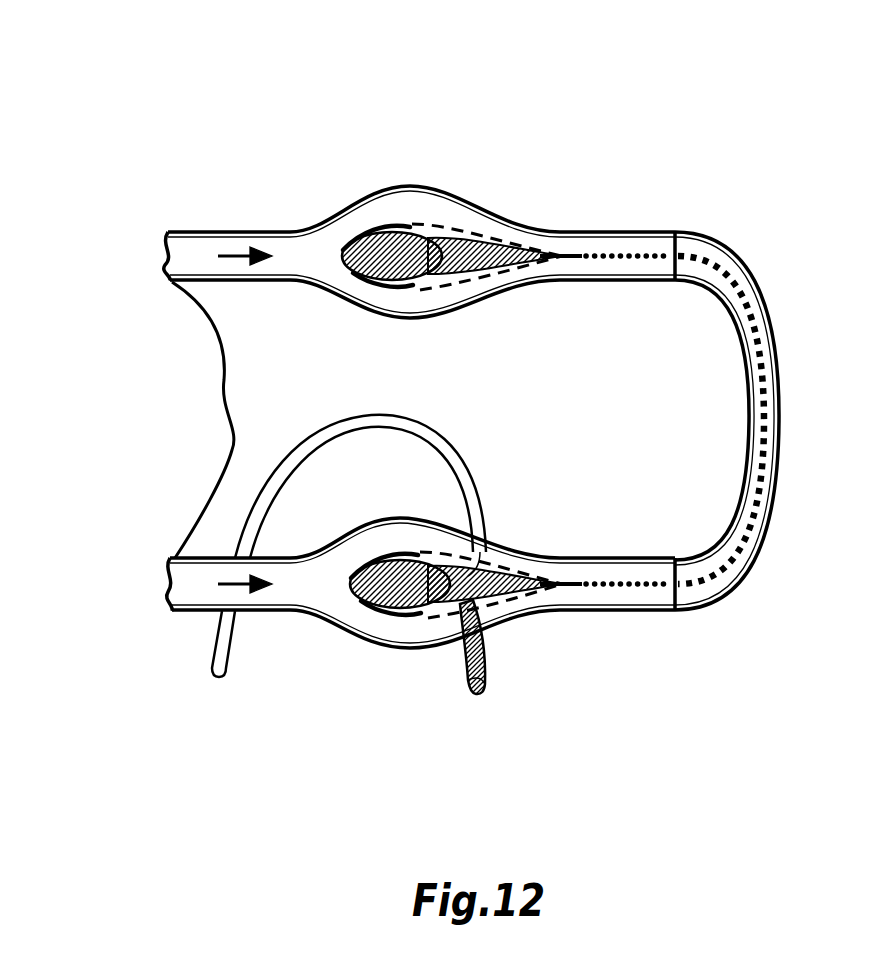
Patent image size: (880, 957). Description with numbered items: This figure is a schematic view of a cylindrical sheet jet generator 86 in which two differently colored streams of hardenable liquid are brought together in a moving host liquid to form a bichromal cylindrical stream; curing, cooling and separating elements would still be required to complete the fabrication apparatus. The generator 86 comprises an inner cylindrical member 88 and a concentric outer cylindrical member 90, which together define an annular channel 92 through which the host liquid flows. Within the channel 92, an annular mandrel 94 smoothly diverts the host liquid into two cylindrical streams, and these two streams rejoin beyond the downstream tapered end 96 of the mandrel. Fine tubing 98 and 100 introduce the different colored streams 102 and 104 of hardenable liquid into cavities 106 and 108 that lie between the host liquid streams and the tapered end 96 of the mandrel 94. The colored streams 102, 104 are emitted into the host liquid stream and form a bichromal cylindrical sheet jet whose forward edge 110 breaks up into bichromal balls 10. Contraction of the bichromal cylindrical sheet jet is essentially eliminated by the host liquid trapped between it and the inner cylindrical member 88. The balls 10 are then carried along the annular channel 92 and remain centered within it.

The cylindrical sheet jet generator 86 is at (545, 99).
The bichromal balls 10 is at (627, 257).
The inner cylindrical member 88 is at (222, 283).
The outer cylindrical member 90 is at (188, 232).
The annular channel 92 is at (185, 252).
The annular mandrel 94 is at (386, 248).
The downstream tapered end 96 is at (468, 265).
The fine tubing 98 is at (218, 655).
The fine tubing 100 is at (470, 670).
The colored stream of hardenable liquid 102 is at (332, 430).
The colored stream of hardenable liquid 104 is at (490, 660).
The cavity 106 is at (453, 272).
The cavity 108 is at (458, 242).
The forward edge 110 is at (556, 256).